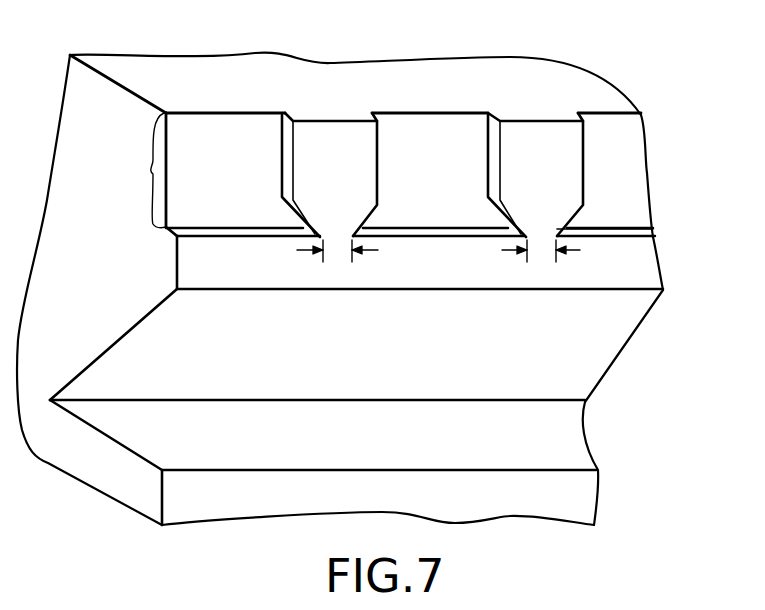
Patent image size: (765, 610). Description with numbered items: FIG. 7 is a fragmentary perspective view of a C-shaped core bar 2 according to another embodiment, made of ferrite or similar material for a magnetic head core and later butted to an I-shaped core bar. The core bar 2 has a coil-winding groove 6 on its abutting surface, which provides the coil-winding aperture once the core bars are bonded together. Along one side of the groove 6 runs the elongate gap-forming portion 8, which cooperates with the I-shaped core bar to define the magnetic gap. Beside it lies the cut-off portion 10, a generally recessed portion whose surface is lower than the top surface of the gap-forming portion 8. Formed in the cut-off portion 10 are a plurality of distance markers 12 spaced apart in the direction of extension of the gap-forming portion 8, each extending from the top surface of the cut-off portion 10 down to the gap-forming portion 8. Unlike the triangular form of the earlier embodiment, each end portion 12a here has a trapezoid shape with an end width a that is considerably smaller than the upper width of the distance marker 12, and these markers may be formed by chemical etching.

The C-shaped core bar 2 is at (677, 165).
The coil-winding groove 6 is at (578, 365).
The gap-forming portion 8 is at (190, 265).
The cut-off portion 10 is at (361, 145).
The distance marker 12 is at (341, 133).
The end portion 12a is at (557, 218).